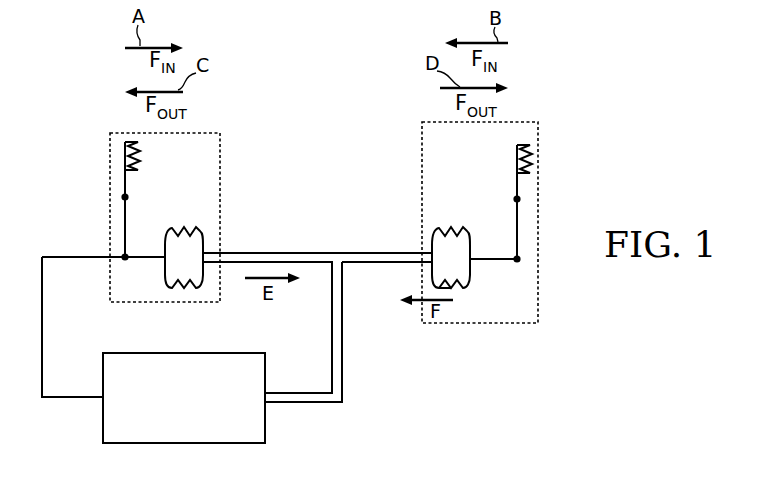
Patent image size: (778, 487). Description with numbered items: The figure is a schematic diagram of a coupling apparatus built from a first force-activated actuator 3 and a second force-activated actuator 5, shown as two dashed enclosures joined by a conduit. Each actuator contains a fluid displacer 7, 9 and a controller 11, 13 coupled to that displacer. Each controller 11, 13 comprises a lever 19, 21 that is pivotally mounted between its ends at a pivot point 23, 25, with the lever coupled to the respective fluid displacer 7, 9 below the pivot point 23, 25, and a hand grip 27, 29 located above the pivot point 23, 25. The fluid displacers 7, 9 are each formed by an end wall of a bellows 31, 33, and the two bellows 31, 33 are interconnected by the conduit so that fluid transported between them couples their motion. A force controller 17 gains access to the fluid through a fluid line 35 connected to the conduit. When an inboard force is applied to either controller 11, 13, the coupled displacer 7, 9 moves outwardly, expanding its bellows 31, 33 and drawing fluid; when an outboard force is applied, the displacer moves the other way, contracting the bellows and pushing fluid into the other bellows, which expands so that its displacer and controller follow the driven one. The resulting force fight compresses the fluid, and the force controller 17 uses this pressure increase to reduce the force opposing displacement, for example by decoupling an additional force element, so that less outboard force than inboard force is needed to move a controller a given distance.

The first force-activated actuator 3 is at (213, 132).
The second force-activated actuator 5 is at (528, 122).
The fluid displacer 7 is at (165, 244).
The fluid displacer 9 is at (472, 271).
The controller 11 is at (128, 157).
The controller 13 is at (520, 160).
The force controller 17 is at (173, 429).
The lever 19 is at (125, 186).
The lever 21 is at (517, 188).
The pivot point 23 is at (125, 197).
The pivot point 25 is at (517, 199).
The hand grip 27 is at (125, 143).
The hand grip 29 is at (517, 147).
The bellows 31 is at (165, 270).
The bellows 33 is at (459, 288).
The fluid line 35 is at (342, 368).